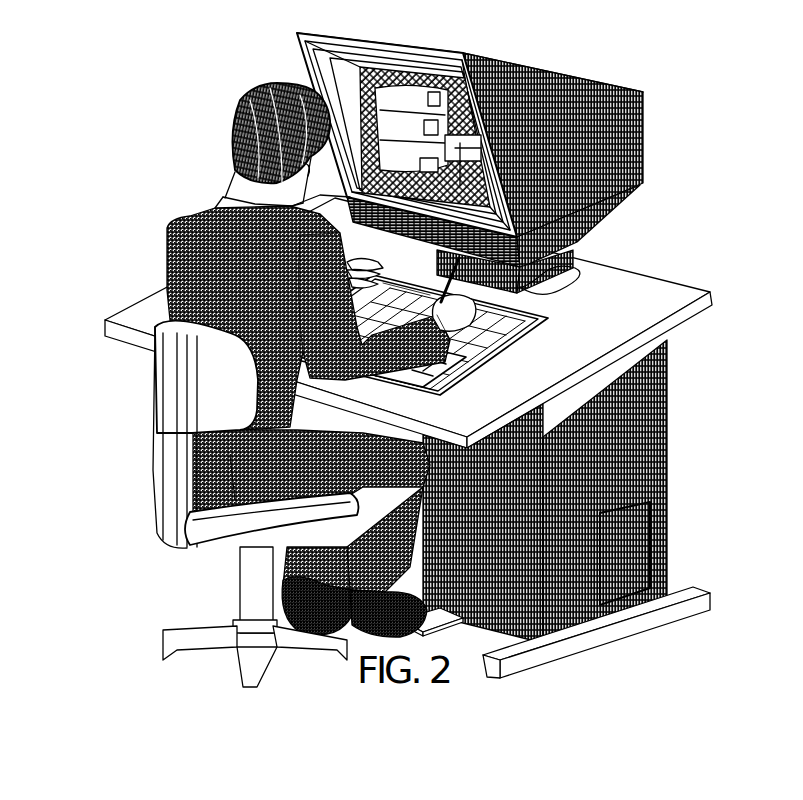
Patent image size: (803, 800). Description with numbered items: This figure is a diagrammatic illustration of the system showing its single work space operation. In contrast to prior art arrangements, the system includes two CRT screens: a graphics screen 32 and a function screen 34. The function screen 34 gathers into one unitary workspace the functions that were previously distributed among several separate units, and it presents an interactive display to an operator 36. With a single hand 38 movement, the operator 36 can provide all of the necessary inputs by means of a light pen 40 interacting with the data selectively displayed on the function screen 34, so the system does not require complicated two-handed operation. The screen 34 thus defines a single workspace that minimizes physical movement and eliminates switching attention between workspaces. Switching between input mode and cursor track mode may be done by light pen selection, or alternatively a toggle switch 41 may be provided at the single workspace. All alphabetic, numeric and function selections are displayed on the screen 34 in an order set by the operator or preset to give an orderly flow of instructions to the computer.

The graphics screen 32 is at (461, 107).
The function screen 34 is at (549, 328).
The operator 36 is at (152, 257).
The hand 38 is at (470, 326).
The light pen 40 is at (432, 273).
The toggle switch 41 is at (376, 265).